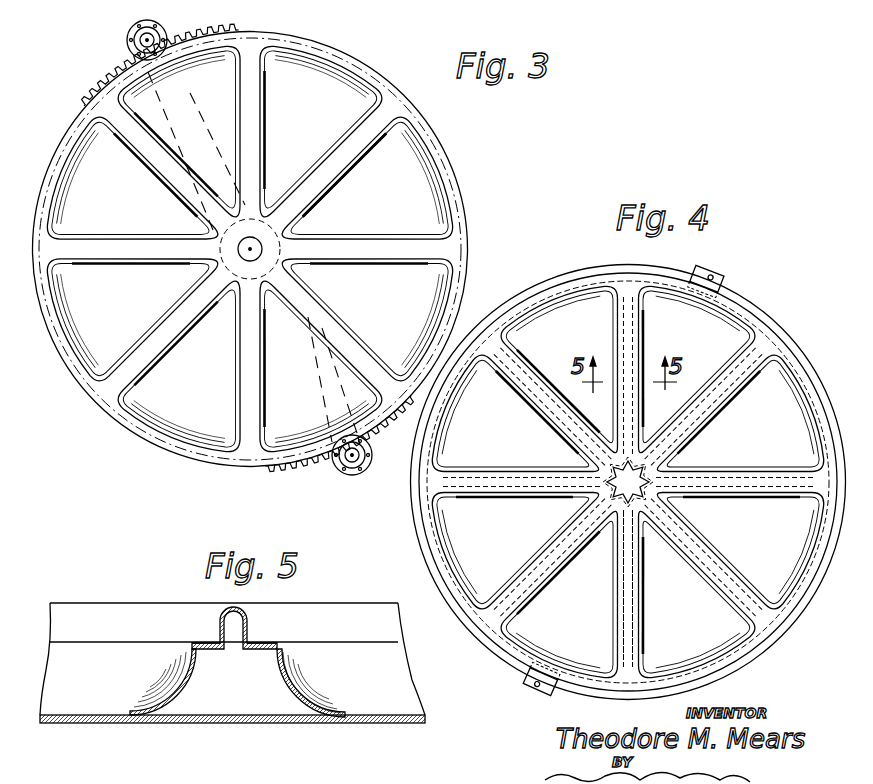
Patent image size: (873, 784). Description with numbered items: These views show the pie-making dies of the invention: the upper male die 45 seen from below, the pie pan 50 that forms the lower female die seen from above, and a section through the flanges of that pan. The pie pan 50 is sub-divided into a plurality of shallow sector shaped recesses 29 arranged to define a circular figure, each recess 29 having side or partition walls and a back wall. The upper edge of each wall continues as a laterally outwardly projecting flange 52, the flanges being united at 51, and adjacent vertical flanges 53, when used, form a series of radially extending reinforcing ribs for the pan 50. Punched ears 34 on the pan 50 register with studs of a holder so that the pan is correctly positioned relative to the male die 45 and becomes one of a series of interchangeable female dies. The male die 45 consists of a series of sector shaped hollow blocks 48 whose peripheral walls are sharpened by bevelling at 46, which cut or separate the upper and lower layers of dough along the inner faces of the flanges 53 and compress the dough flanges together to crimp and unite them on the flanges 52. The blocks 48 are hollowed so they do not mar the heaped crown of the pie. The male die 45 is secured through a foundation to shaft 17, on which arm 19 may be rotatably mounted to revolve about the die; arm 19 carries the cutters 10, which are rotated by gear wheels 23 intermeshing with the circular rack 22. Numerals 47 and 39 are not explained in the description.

In FIG. 3, the cutters 10 is at (127, 33).
In FIG. 3, the shaft 17 is at (257, 248).
In FIG. 3, the arm 19 is at (191, 93).
In FIG. 3, the circular rack 22 is at (230, 29).
In FIG. 3, the gear wheels 23 is at (160, 24).
In FIG. 3, the upper (male) die 45 is at (330, 104).
In FIG. 3, the bevelled sharpened peripheral walls 46 is at (382, 107).
In FIG. 3, the partition wall 47 is at (385, 125).
In FIG. 3, the sector shaped hollow blocks 48 is at (417, 160).
In FIG. 4, the sector shaped recesses 29 is at (663, 481).
In FIG. 5, the sector shaped recesses 29 is at (232, 659).
In FIG. 4, the punched ears 34 is at (705, 268).
In FIG. 4, the central web 39 is at (655, 468).
In FIG. 4, the pie pan 50 is at (754, 301).
In FIG. 5, the pie pan 50 is at (345, 723).
In FIG. 4, the union of flanges 51 is at (625, 603).
In FIG. 5, the union of flanges 51 is at (240, 613).
In FIG. 4, the laterally outwardly projecting flange 52 is at (575, 502).
In FIG. 5, the laterally outwardly projecting flange 52 is at (205, 641).
In FIG. 5, the vertical flanges 53 is at (218, 623).